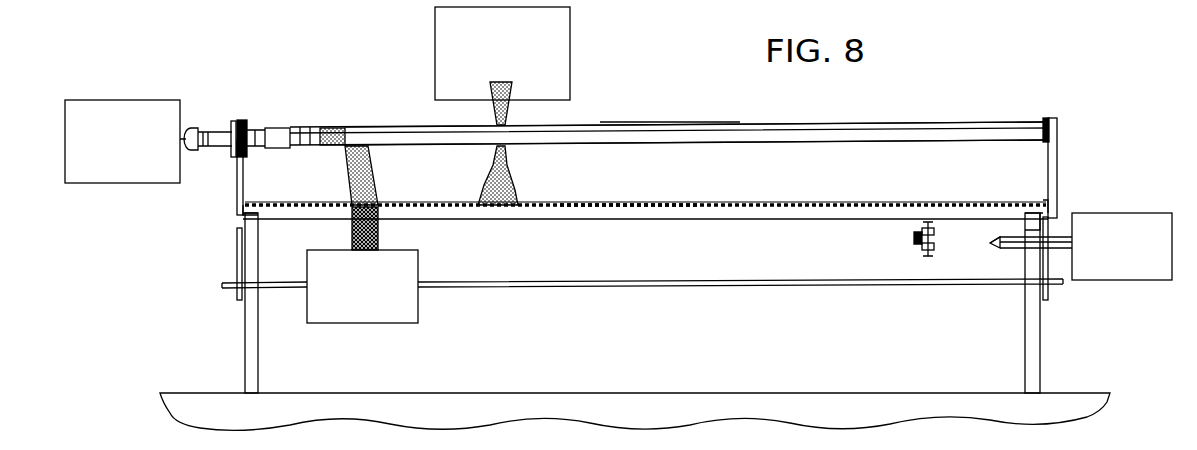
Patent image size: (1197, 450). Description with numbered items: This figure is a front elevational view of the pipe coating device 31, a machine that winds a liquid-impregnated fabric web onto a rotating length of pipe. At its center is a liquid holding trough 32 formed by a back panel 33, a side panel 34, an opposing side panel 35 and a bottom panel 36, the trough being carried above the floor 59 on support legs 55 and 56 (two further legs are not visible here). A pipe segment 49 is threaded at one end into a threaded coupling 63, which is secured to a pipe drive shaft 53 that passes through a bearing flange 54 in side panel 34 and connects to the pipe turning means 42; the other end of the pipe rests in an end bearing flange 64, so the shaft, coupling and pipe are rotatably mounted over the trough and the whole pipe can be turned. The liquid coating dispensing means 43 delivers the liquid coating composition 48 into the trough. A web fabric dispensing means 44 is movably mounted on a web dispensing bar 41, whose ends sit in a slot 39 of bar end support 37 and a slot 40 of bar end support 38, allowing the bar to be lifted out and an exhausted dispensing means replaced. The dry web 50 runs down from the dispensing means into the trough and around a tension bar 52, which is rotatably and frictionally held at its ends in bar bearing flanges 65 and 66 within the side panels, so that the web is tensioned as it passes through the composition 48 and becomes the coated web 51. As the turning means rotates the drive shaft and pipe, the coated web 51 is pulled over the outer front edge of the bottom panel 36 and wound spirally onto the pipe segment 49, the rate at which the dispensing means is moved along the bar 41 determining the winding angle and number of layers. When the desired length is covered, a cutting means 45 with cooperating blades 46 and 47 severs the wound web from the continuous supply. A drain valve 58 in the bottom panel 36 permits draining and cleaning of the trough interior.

The pipe coating device 31 is at (666, 96).
The liquid holding trough 32 is at (832, 122).
The back panel 33 is at (760, 124).
The side panel 34 is at (240, 178).
The opposing side panel 35 is at (1058, 165).
The bottom panel 36 is at (570, 223).
The bar end support 37 is at (238, 232).
The bar end support 38 is at (1045, 297).
The slot 39 is at (238, 272).
The slot 40 is at (1043, 268).
The web dispensing bar 41 is at (628, 280).
The pipe turning means 42 is at (110, 98).
The liquid coating dispensing means 43 is at (435, 68).
The web fabric dispensing means 44 is at (415, 323).
The cutting means 45 is at (1122, 282).
The blade 46 is at (1007, 236).
The blade 47 is at (1000, 248).
The liquid coating composition 48 is at (510, 185).
The pipe segment 49 is at (740, 140).
The dry web 50 is at (348, 236).
The coated web 51 is at (345, 180).
The tension bar 52 is at (817, 203).
The pipe drive shaft 53 is at (211, 128).
The bearing flange 54 is at (233, 122).
The support leg 55 is at (259, 345).
The support leg 56 is at (1030, 363).
The drain valve 58 is at (927, 243).
The floor 59 is at (660, 392).
The threaded coupling 63 is at (287, 128).
The end bearing flange 64 is at (1045, 120).
The bar bearing flange 65 is at (245, 207).
The bar bearing flange 66 is at (1047, 200).